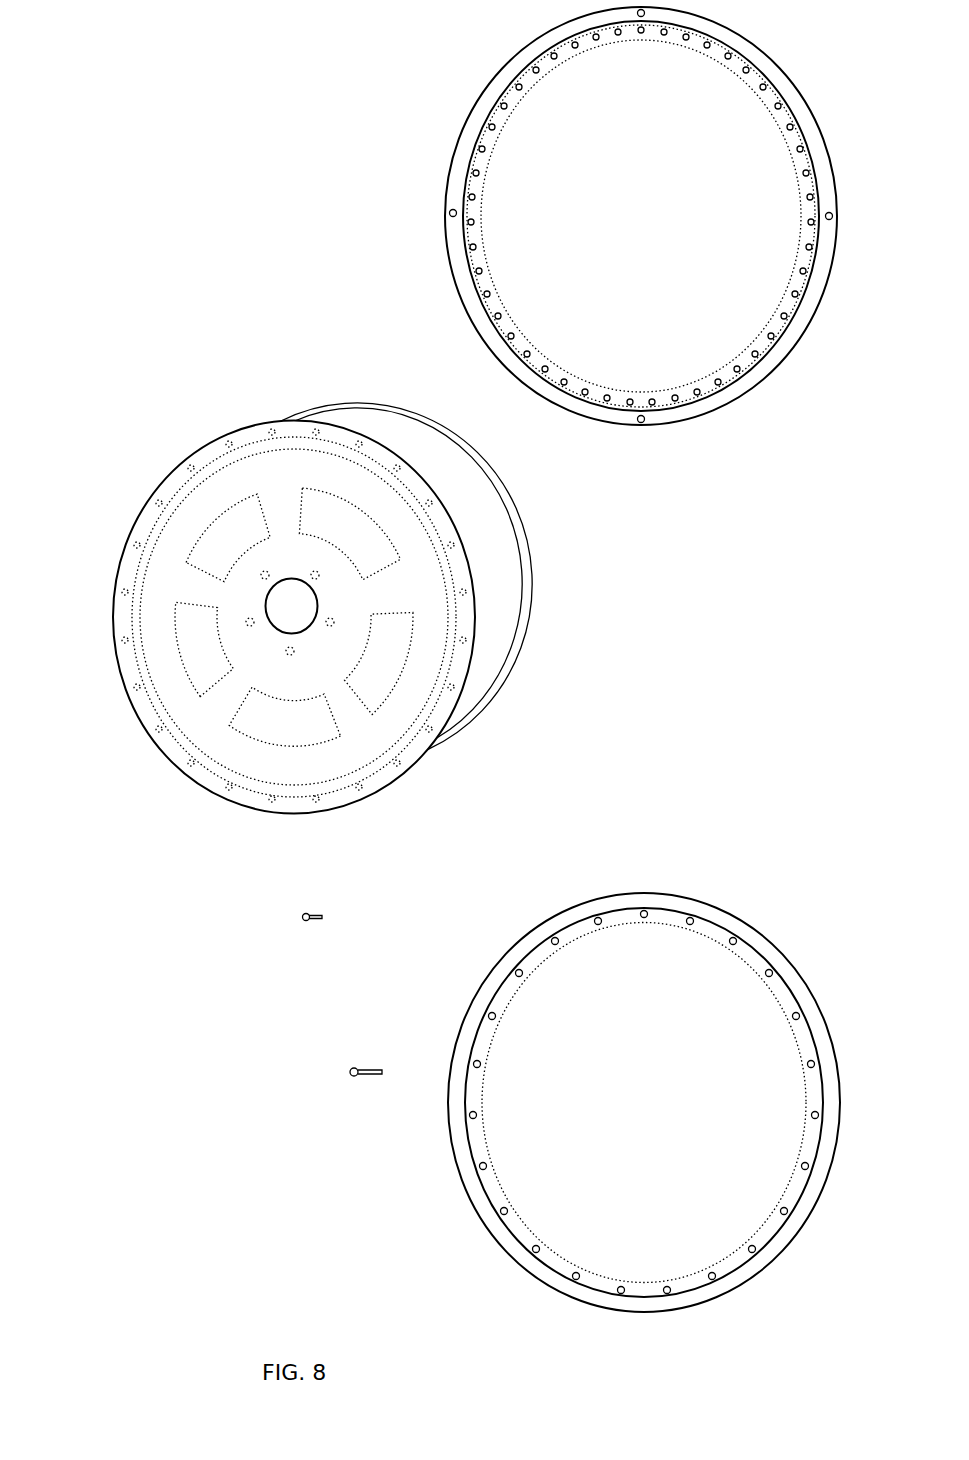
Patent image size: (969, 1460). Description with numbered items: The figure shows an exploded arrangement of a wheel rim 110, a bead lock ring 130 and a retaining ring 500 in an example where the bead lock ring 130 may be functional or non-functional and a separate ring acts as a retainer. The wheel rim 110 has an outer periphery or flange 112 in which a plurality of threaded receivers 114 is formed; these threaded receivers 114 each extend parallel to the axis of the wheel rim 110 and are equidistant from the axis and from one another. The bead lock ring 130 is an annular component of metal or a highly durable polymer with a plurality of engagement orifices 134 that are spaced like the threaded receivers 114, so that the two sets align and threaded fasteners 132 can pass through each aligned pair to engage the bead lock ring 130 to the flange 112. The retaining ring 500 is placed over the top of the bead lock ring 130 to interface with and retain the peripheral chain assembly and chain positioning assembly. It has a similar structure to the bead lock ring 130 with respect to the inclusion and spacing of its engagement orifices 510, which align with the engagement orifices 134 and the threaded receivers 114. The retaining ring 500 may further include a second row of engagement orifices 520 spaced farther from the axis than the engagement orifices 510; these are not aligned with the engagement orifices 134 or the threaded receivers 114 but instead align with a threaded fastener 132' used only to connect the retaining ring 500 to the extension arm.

The retaining ring 500 is at (446, 126).
The second row of engagement orifices 520 is at (444, 204).
The engagement orifices 510 is at (713, 393).
The wheel rim 110 is at (514, 644).
The flange 112 is at (168, 764).
The threaded receivers 114 is at (315, 427).
The threaded fasteners 132 is at (328, 1098).
The threaded fastener 132' is at (266, 943).
The bead lock ring 130 is at (486, 1188).
The engagement orifices 134 is at (650, 908).